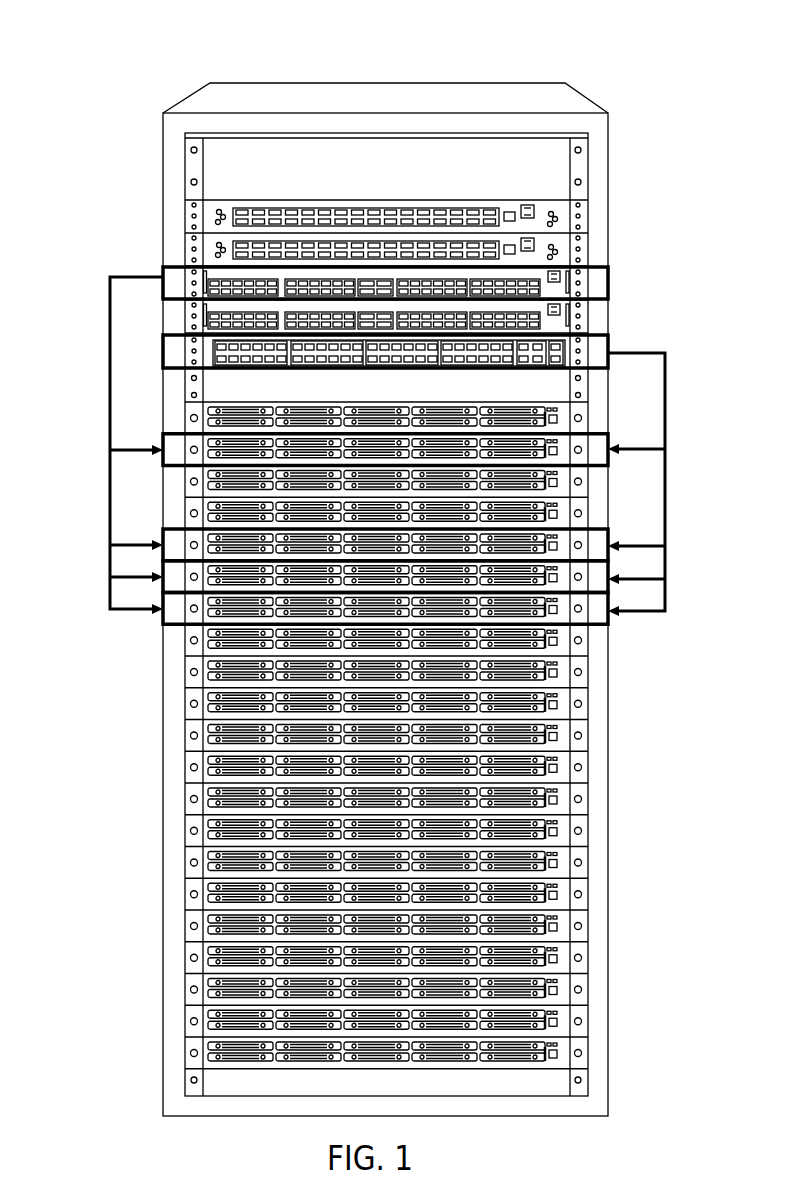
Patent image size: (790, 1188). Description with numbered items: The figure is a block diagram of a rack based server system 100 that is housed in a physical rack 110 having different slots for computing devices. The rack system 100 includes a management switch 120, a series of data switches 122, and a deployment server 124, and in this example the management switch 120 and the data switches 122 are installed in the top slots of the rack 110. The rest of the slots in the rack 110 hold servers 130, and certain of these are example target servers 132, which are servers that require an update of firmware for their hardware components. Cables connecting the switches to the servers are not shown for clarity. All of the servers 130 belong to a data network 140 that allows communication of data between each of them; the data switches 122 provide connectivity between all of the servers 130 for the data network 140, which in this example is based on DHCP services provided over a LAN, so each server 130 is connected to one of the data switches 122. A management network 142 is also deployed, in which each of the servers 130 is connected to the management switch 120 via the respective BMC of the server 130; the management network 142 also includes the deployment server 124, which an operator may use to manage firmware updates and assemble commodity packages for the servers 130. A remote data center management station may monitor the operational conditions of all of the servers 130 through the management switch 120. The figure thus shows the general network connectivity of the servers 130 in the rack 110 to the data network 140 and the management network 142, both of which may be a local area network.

The rack based server system 100 is at (162, 50).
The rack 110 is at (163, 155).
The management switch 120 is at (185, 352).
The data switches 122 is at (185, 283).
The deployment server 124 is at (185, 455).
The servers 130 is at (185, 517).
The target servers 132 is at (185, 550).
The data network 140 is at (110, 432).
The management network 142 is at (665, 483).